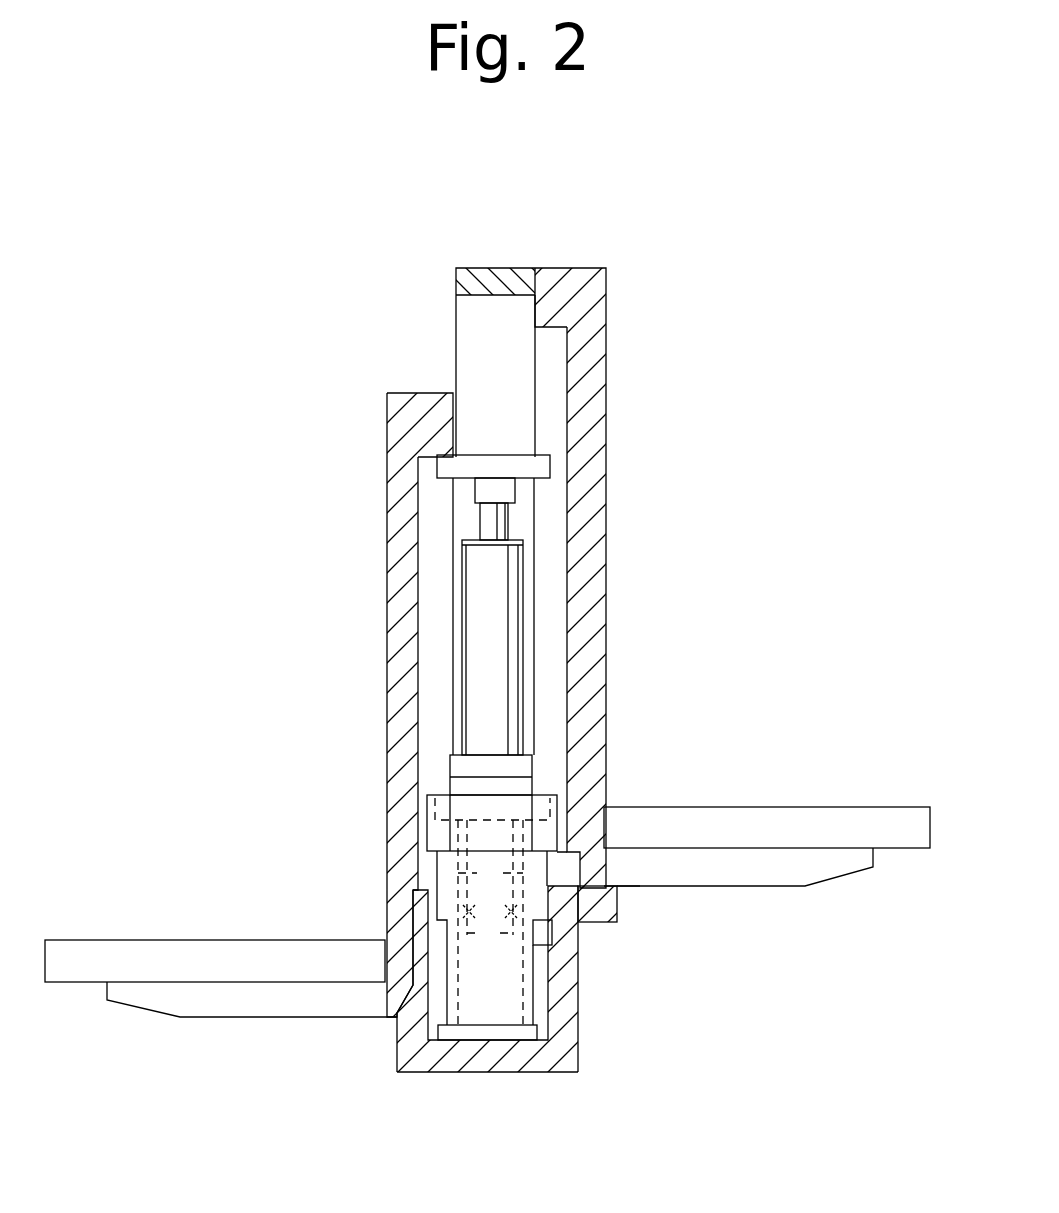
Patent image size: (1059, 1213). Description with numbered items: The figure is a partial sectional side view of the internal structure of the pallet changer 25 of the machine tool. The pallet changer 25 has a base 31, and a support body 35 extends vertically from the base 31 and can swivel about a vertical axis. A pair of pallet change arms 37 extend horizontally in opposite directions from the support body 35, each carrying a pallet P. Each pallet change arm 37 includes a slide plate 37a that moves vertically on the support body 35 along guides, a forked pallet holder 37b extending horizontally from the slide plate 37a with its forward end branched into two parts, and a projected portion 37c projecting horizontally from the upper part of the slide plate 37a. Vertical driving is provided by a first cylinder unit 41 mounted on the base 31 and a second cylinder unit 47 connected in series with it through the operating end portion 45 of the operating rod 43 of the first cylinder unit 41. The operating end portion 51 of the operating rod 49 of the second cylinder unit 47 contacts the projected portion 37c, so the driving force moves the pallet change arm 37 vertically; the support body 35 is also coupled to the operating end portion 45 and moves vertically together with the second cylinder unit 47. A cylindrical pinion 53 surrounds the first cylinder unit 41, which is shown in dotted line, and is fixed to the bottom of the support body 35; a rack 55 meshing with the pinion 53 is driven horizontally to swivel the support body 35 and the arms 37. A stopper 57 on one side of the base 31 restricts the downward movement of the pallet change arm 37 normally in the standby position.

The pallet changer 25 is at (688, 214).
The base 31 is at (497, 1073).
The support body 35 is at (498, 268).
The pallet change arm 37 is at (607, 385).
The slide plate 37a is at (592, 512).
The forked pallet holder 37b is at (265, 1010).
The projected portion 37c is at (562, 278).
The first cylinder unit 41 is at (396, 1050).
The operating rod 43 is at (440, 880).
The operating end portion 45 is at (566, 800).
The second cylinder unit 47 is at (527, 648).
The operating rod 49 is at (512, 530).
The operating end portion 51 is at (552, 468).
The pinion 53 is at (542, 1004).
The rack 55 is at (556, 932).
The stopper 57 is at (617, 905).
The pallet P is at (222, 940).